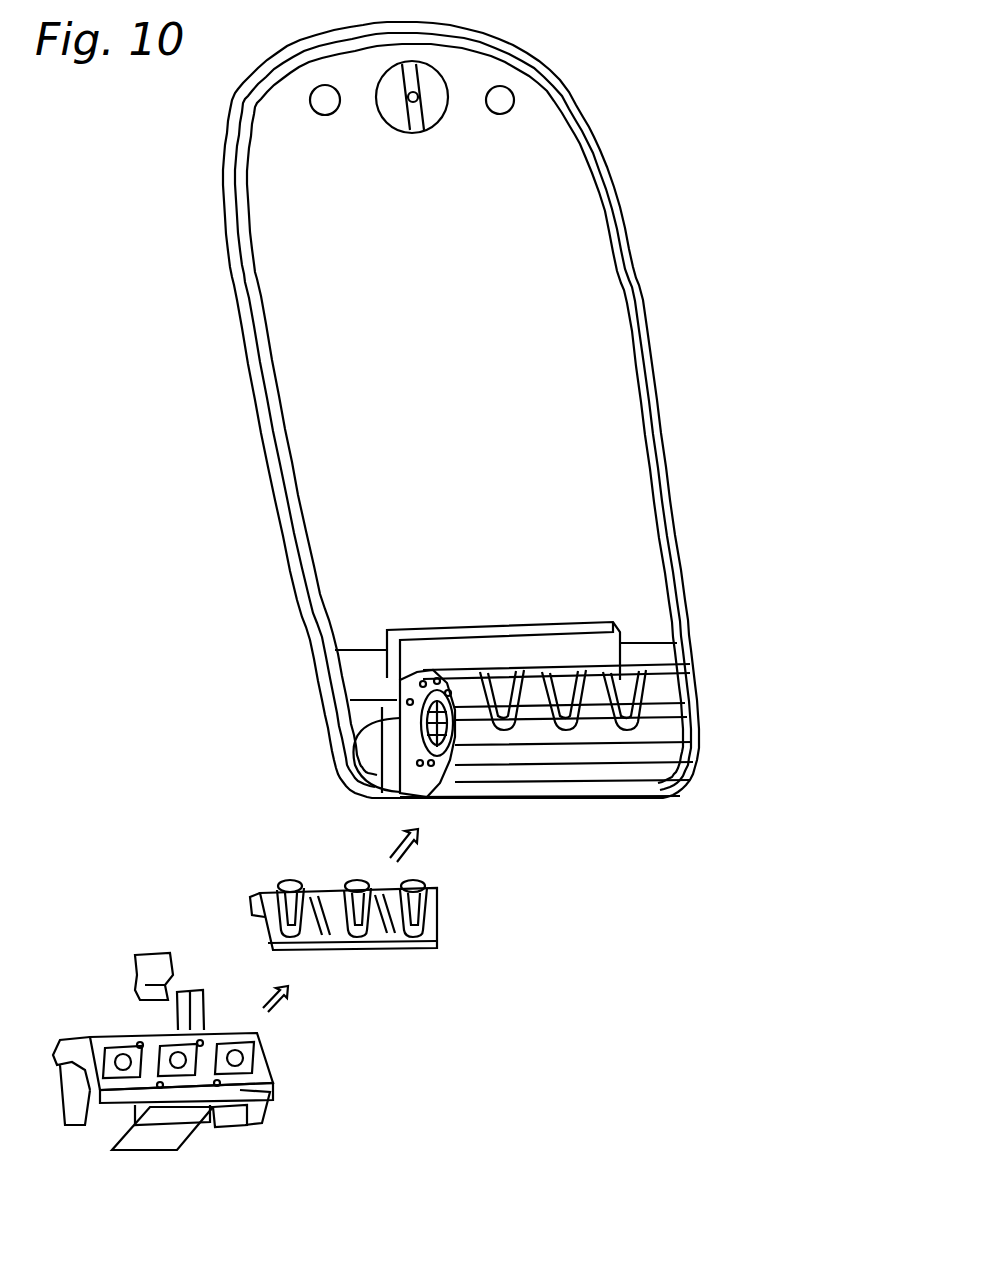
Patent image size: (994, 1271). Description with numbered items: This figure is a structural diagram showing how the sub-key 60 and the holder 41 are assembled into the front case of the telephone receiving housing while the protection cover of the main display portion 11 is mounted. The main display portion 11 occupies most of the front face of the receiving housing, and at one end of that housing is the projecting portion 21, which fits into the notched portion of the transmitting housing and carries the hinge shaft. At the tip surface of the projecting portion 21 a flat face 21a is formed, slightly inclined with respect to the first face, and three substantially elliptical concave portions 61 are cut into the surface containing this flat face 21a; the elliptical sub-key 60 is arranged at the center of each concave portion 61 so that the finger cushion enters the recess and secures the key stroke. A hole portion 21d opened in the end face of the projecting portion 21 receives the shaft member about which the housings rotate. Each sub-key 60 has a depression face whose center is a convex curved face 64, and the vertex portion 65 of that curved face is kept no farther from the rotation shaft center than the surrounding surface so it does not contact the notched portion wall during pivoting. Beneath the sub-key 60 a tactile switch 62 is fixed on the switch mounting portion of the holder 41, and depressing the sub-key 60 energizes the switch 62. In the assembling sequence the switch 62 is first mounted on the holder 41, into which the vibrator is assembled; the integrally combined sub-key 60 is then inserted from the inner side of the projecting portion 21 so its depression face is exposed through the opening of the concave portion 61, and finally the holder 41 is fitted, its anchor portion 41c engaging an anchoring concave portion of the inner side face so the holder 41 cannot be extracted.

The main display portion 11 is at (628, 450).
The projecting portion 21 is at (657, 723).
The flat face 21a is at (650, 677).
The hole portion 21d is at (333, 716).
The concave portions 61 is at (622, 708).
The sub-key 60 is at (379, 927).
The curved face 64 is at (437, 913).
The vertex portion 65 is at (420, 895).
The tactile switch 62 is at (253, 1053).
The holder 41 is at (233, 1108).
The anchor portion 41c is at (182, 1135).